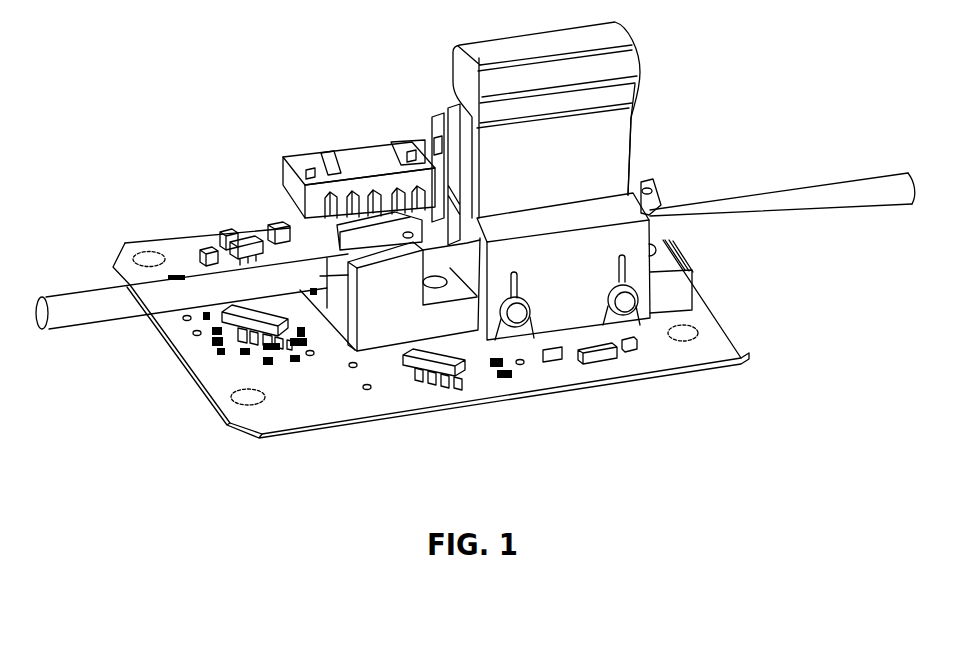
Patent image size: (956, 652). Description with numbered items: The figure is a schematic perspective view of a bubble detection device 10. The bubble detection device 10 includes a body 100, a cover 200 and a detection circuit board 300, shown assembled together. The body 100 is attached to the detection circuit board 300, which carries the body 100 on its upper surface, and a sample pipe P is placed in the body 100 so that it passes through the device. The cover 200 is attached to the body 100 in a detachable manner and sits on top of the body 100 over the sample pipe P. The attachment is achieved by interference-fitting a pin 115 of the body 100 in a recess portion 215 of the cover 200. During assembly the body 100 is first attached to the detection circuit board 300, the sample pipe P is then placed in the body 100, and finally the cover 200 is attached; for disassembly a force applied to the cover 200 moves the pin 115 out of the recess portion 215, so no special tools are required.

The bubble detection device 10 is at (385, 79).
The body 100 is at (670, 297).
The pin 115 is at (517, 316).
The cover 200 is at (568, 153).
The recess portion 215 is at (512, 325).
The detection circuit board 300 is at (713, 347).
The sample pipe P is at (810, 203).